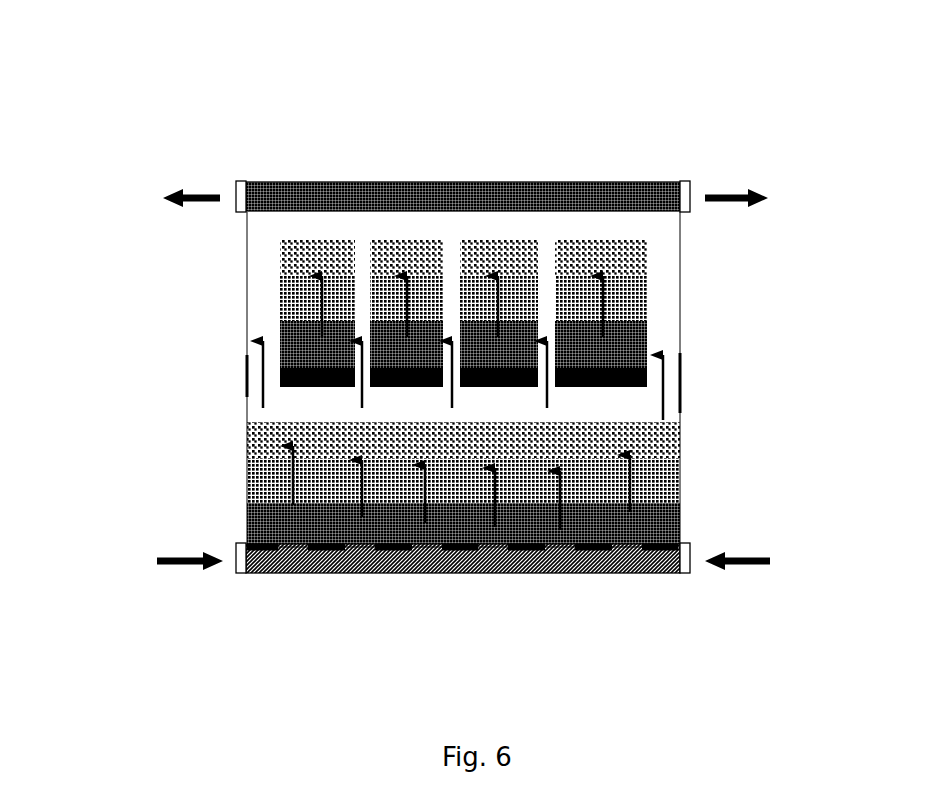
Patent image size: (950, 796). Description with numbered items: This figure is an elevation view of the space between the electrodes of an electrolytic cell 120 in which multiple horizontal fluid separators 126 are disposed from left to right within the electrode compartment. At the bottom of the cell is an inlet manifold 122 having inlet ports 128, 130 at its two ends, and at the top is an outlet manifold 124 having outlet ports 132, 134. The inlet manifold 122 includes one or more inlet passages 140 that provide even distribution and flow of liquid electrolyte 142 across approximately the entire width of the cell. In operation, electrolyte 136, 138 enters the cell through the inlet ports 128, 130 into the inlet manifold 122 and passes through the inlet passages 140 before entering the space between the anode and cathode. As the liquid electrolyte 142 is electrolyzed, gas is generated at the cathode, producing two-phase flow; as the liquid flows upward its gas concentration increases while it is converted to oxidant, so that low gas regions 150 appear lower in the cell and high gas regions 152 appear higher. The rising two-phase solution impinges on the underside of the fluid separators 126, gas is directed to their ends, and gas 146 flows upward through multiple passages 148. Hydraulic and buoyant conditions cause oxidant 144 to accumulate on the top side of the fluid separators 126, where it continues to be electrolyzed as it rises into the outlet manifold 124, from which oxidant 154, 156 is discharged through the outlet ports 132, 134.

The electrolytic cell 120 is at (243, 320).
The inlet manifold 122 is at (383, 565).
The outlet manifold 124 is at (320, 193).
The fluid separators 126 is at (307, 383).
The inlet port 128 is at (233, 573).
The inlet port 130 is at (690, 573).
The outlet port 132 is at (237, 180).
The outlet port 134 is at (693, 180).
The electrolyte 136 is at (173, 567).
The electrolyte 138 is at (737, 565).
The inlet passages 140 is at (493, 545).
The liquid electrolyte 142 is at (630, 478).
The oxidant 144 is at (603, 287).
The gas 146 is at (665, 412).
The passages 148 is at (672, 375).
The low gas regions 150 is at (397, 513).
The high gas regions 152 is at (510, 402).
The oxidant 154 is at (197, 200).
The oxidant 156 is at (723, 200).